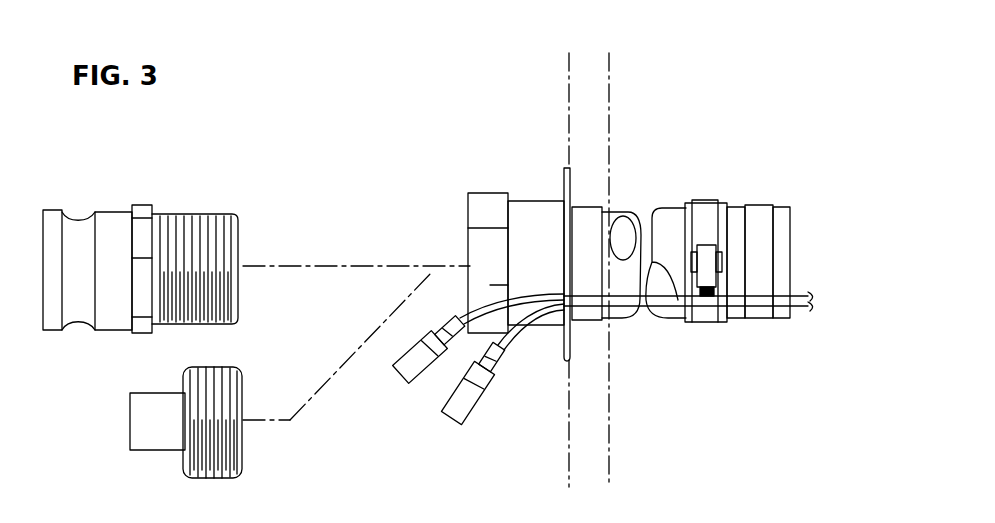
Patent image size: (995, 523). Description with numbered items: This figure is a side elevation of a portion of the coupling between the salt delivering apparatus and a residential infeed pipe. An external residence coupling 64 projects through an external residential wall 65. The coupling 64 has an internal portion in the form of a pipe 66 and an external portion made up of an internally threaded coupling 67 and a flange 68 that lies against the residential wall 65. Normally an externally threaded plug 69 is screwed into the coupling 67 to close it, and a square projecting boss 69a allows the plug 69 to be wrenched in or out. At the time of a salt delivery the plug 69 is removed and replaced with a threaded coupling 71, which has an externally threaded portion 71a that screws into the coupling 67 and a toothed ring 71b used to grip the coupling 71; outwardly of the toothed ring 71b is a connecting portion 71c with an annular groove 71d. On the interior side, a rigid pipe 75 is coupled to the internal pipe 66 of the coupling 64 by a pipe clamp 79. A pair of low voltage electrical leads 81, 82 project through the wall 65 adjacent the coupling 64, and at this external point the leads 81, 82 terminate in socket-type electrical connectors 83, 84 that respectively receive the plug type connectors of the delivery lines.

The external residence coupling 64 is at (507, 163).
The external residential wall 65 is at (562, 102).
The pipe 66 is at (609, 207).
The internally threaded coupling 67 is at (518, 198).
The flange 68 is at (562, 168).
The externally threaded plug 69 is at (221, 478).
The square projecting boss 69a is at (150, 450).
The threaded coupling 71 is at (126, 203).
The externally threaded portion 71a is at (208, 215).
The toothed ring 71b is at (138, 335).
The connecting portion 71c is at (105, 213).
The annular groove 71d is at (80, 217).
The rigid pipe 75 is at (780, 212).
The pipe clamp 79 is at (710, 322).
The low voltage electrical lead 81 is at (467, 302).
The low voltage electrical lead 82 is at (508, 348).
The socket-type electrical connector 83 is at (408, 348).
The socket-type electrical connector 84 is at (477, 417).